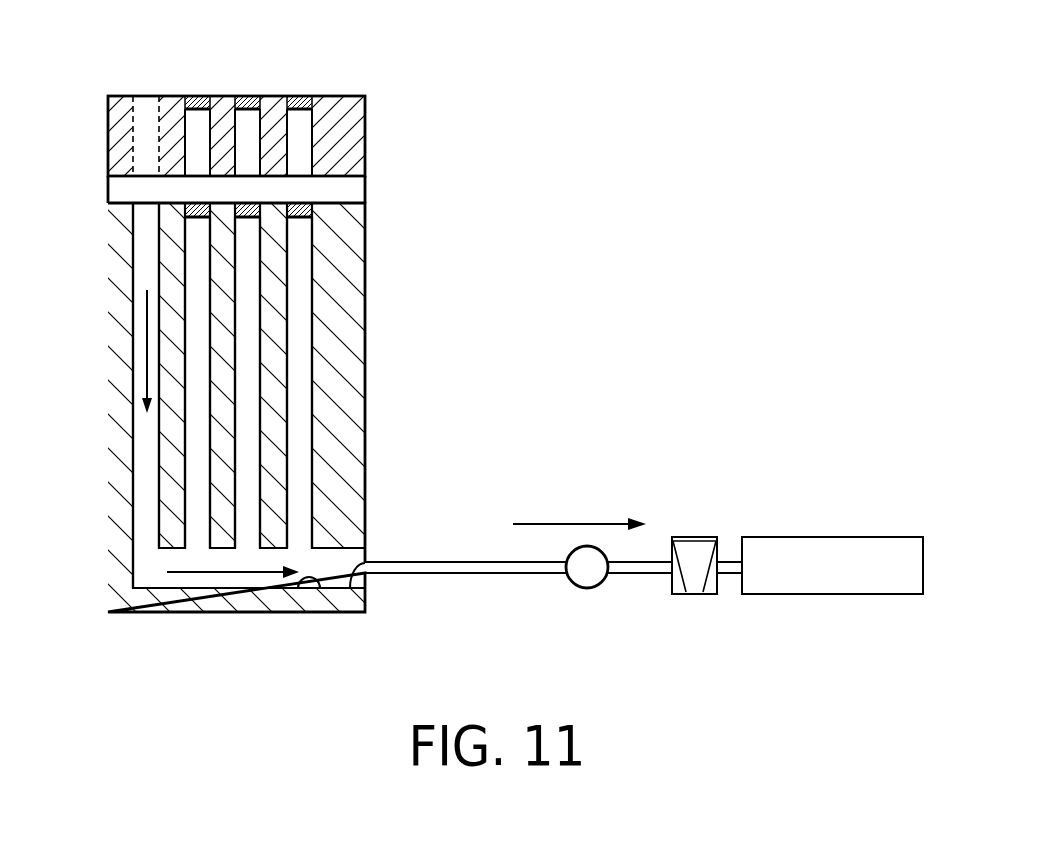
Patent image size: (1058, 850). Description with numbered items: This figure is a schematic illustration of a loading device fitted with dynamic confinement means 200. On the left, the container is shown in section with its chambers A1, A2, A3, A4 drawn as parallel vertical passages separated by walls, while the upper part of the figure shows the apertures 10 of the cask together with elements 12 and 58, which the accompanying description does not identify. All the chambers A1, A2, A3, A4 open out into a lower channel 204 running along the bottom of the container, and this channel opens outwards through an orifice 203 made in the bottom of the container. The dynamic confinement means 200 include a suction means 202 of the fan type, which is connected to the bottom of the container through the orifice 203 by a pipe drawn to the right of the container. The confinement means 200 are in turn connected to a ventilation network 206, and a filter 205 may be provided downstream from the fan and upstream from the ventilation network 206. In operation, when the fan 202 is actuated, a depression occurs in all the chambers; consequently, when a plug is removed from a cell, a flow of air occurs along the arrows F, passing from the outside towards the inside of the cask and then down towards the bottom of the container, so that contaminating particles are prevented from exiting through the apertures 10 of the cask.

The apertures 10 is at (157, 125).
The power generation cell 12 is at (240, 95).
The seal member 58 is at (305, 203).
The chamber A1 is at (148, 262).
The chamber A2 is at (200, 360).
The chamber A3 is at (247, 410).
The chamber A4 is at (303, 450).
The arrows F is at (147, 348).
The dynamic confinement means 200 is at (404, 518).
The suction means 202 is at (587, 573).
The orifice 203 is at (356, 592).
The lower channel 204 is at (301, 590).
The filter 205 is at (688, 550).
The ventilation network 206 is at (867, 552).